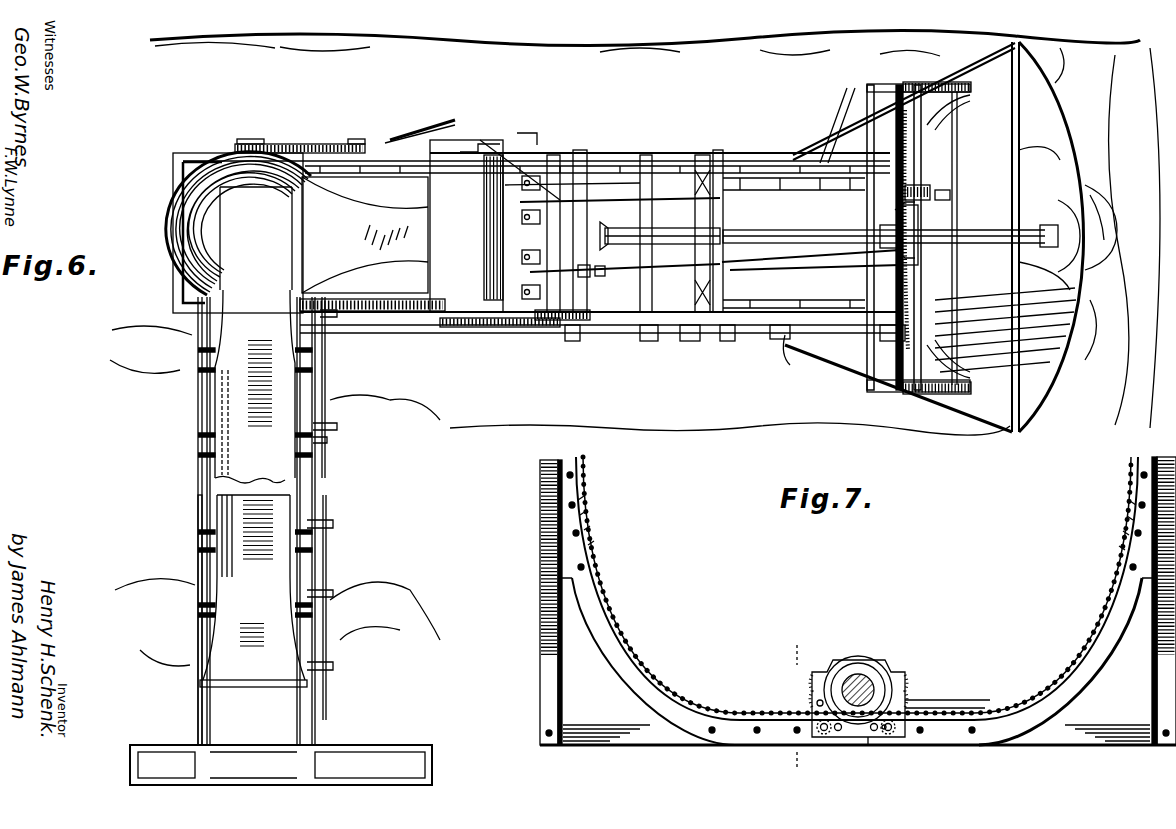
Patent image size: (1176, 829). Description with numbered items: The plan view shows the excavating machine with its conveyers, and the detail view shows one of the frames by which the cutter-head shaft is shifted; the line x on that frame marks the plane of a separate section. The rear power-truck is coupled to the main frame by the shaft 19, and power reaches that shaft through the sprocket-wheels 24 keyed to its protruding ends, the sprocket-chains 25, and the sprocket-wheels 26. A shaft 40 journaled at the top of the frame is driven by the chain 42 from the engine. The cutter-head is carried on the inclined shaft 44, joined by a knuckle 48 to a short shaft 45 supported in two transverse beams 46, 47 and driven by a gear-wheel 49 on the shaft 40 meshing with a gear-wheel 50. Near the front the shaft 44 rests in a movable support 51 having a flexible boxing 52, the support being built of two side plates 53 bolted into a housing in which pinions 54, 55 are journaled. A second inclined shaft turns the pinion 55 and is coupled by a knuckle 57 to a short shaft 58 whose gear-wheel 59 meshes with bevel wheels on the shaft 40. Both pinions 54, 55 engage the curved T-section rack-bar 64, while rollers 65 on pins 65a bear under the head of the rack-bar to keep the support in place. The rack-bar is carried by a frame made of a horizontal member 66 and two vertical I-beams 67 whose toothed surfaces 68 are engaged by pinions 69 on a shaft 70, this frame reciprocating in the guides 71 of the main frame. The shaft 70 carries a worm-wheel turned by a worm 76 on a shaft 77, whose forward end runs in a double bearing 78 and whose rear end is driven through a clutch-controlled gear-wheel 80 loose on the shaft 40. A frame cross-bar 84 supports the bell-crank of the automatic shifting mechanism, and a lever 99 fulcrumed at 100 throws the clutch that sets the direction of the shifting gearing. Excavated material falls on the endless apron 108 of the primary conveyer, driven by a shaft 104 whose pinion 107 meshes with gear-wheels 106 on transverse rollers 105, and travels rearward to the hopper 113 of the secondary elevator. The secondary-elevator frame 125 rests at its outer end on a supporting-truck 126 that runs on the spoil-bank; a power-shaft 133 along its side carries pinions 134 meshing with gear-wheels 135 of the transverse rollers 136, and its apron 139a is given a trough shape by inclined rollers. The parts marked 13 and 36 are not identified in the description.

In FIG. 6, the top rail 13 is at (662, 150).
In FIG. 6, the shaft 19 is at (483, 222).
In FIG. 6, the sprocket-wheels 24 is at (356, 139).
In FIG. 6, the sprocket-chains 25 is at (312, 144).
In FIG. 6, the sprocket-wheels 26 is at (250, 139).
In FIG. 6, the lever 36 is at (450, 120).
In FIG. 6, the shaft 40 is at (500, 150).
In FIG. 6, the chain 42 is at (565, 328).
In FIG. 6, the shaft 44 is at (795, 232).
In FIG. 7, the shaft 44 is at (868, 686).
In FIG. 6, the short shaft 45 is at (520, 185).
In FIG. 6, the transverse beam 46 is at (553, 160).
In FIG. 6, the transverse beam 47 is at (582, 170).
In FIG. 6, the knuckle 48 is at (615, 278).
In FIG. 6, the gear-wheel 49 is at (520, 255).
In FIG. 6, the gear-wheel 50 is at (520, 215).
In FIG. 6, the movable support 51 is at (895, 258).
In FIG. 7, the movable support 51 is at (868, 738).
In FIG. 6, the flexible boxing 52 is at (925, 222).
In FIG. 7, the flexible boxing 52 is at (866, 678).
In FIG. 6, the side plates 53 is at (880, 230).
In FIG. 7, the side plates 53 is at (940, 740).
In FIG. 7, the pinion 54 is at (905, 694).
In FIG. 7, the pinion 55 is at (821, 700).
In FIG. 6, the knuckle 57 is at (585, 278).
In FIG. 6, the short shaft 58 is at (540, 322).
In FIG. 6, the gear-wheel 59 is at (520, 290).
In FIG. 6, the curved rack-bar 64 is at (915, 185).
In FIG. 7, the rollers 65 is at (828, 735).
In FIG. 7, the pins 65a is at (886, 735).
In FIG. 6, the horizontal member 66 is at (815, 256).
In FIG. 7, the horizontal member 66 is at (658, 745).
In FIG. 6, the I-beams 67 is at (930, 82).
In FIG. 7, the I-beams 67 is at (548, 668).
In FIG. 6, the toothed surfaces 68 is at (955, 95).
In FIG. 7, the toothed surfaces 68 is at (548, 530).
In FIG. 6, the pinions 69 is at (905, 80).
In FIG. 6, the shaft 70 is at (921, 130).
In FIG. 6, the guide 71 is at (768, 150).
In FIG. 6, the worm 76 is at (935, 195).
In FIG. 6, the shaft 77 is at (794, 185).
In FIG. 6, the double bearing 78 is at (920, 205).
In FIG. 6, the gear-wheel 80 is at (660, 228).
In FIG. 6, the frame cross-bar 84 is at (660, 200).
In FIG. 6, the lever 99 is at (700, 335).
In FIG. 6, the fulcrum 100 is at (655, 330).
In FIG. 6, the shaft 104 is at (735, 338).
In FIG. 6, the rollers 105 is at (780, 300).
In FIG. 6, the gear-wheels 106 is at (790, 330).
In FIG. 6, the pinion 107 is at (801, 352).
In FIG. 6, the endless apron 108 is at (365, 235).
In FIG. 6, the hopper 113 is at (175, 200).
In FIG. 6, the secondary-elevator frame 125 is at (198, 400).
In FIG. 6, the supporting-truck 126 is at (268, 785).
In FIG. 6, the power-shaft 133 is at (325, 402).
In FIG. 6, the pinions 134 is at (337, 430).
In FIG. 6, the gear-wheels 135 is at (327, 443).
In FIG. 6, the transverse rollers 136 is at (198, 540).
In FIG. 6, the apron 139a is at (253, 437).
In FIG. 7, the section line x is at (796, 706).